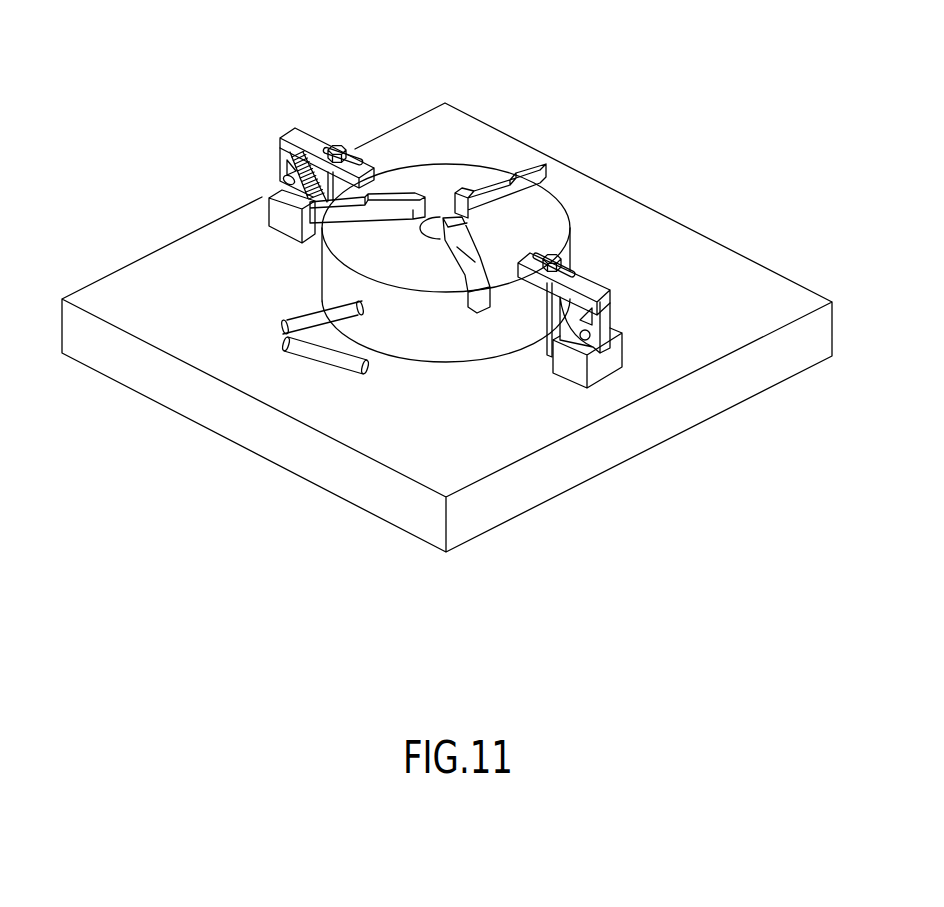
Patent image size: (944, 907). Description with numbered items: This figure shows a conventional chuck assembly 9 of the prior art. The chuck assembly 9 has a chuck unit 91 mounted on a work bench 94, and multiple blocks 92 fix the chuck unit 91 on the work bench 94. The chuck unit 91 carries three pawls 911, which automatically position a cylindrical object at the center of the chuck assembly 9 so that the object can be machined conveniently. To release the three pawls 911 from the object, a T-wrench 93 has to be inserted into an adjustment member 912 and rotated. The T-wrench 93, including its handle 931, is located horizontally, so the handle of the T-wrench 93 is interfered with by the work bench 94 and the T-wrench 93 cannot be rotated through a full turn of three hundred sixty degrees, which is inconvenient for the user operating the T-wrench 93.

The chuck assembly 9 is at (562, 85).
The chuck unit 91 is at (562, 256).
The pawls 911 is at (551, 172).
The adjustment member 912 is at (360, 307).
The blocks 92 is at (307, 140).
The T-wrench 93 is at (323, 323).
The handle rod 931 is at (357, 360).
The work bench 94 is at (212, 432).